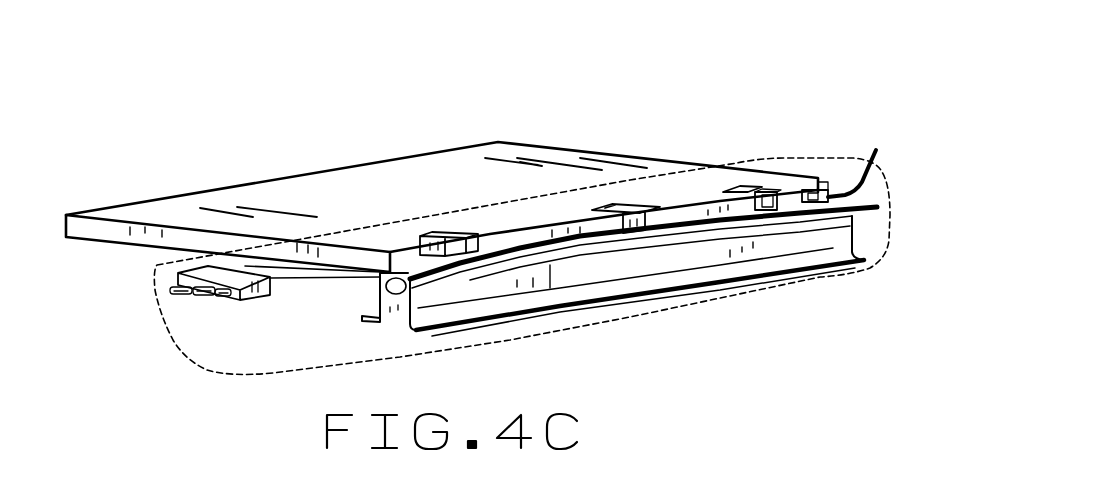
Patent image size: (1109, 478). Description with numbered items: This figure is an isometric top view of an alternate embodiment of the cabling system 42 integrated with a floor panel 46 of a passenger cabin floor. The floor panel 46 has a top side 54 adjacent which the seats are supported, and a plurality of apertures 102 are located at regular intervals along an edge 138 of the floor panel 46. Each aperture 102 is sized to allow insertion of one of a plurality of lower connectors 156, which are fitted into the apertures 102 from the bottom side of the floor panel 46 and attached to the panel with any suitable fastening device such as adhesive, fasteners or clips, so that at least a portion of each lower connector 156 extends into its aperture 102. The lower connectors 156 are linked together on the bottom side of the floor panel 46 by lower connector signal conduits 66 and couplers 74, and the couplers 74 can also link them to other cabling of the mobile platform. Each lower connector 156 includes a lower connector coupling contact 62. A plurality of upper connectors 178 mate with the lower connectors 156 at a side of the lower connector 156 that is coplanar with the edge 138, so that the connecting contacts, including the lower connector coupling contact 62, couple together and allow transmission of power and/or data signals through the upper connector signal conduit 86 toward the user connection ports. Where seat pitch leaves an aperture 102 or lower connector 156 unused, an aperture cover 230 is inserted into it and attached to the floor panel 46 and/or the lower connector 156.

The floor panel 46 is at (232, 186).
The top side 54 is at (388, 175).
The aperture 102 is at (432, 232).
The aperture cover 230 is at (597, 207).
The lower connector 156 is at (730, 187).
The lower connector coupling contact 62 is at (767, 189).
The cabling system 42 is at (788, 157).
The upper connector 178 is at (820, 182).
The upper connector signal conduit 86 is at (874, 157).
The lower connector signal conduit 66 is at (165, 262).
The coupler 74 is at (262, 292).
The edge 138 is at (357, 268).